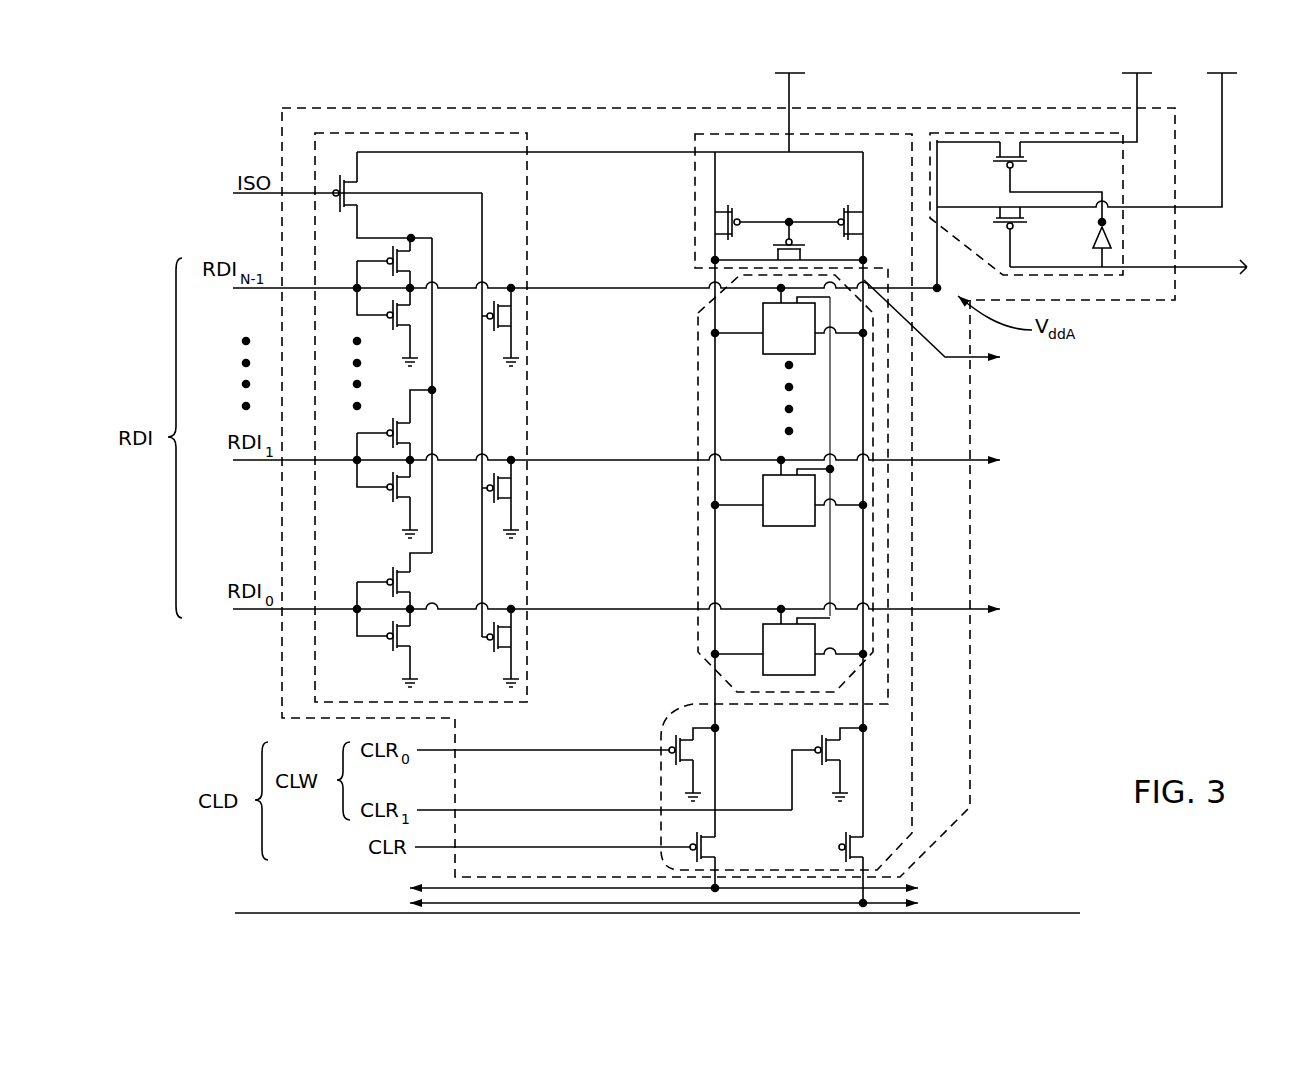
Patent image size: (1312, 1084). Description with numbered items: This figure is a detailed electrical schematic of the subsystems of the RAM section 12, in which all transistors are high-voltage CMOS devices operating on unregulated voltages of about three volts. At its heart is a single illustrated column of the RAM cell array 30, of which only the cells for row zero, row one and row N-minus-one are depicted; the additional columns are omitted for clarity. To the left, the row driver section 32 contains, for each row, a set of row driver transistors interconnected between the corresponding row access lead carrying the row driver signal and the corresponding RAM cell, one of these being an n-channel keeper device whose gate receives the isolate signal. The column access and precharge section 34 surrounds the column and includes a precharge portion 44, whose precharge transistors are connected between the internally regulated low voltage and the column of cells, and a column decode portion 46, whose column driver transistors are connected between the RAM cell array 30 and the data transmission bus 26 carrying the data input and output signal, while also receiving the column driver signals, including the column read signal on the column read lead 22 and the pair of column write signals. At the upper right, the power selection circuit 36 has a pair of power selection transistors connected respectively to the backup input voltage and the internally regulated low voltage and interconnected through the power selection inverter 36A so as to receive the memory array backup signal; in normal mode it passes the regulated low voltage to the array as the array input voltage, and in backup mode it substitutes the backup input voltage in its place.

The RAM section 12 is at (268, 128).
The row driver section 32 is at (414, 128).
The column access and precharge section 34 is at (860, 128).
The power selection circuit 36 is at (1112, 160).
The power selection inverter 36A is at (1106, 222).
The precharge portion 44 is at (802, 190).
The column decode portion 46 is at (769, 770).
The RAM cell array 30 is at (806, 491).
The column read lead 22 is at (415, 848).
The data transmission bus 26 is at (785, 888).